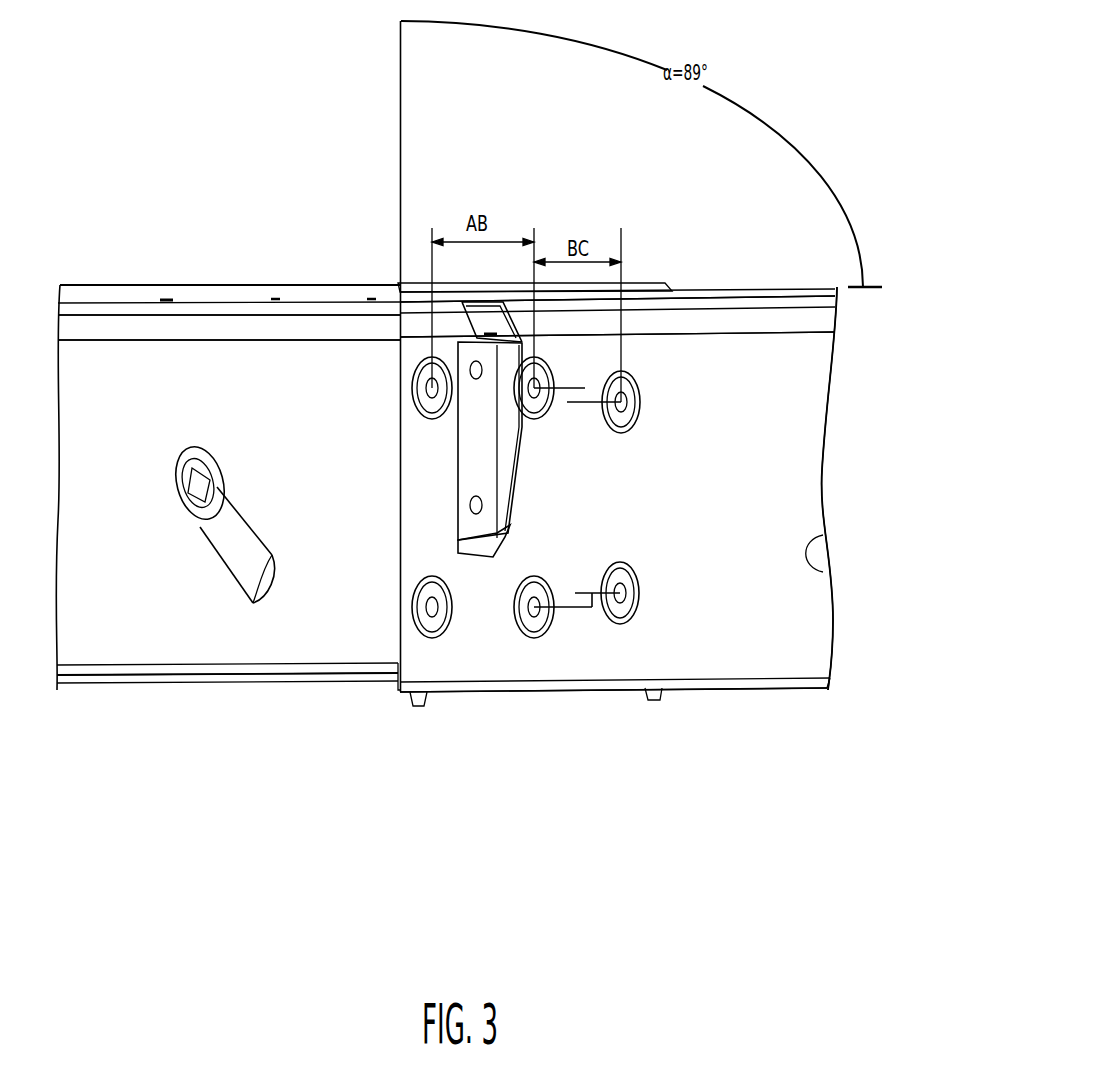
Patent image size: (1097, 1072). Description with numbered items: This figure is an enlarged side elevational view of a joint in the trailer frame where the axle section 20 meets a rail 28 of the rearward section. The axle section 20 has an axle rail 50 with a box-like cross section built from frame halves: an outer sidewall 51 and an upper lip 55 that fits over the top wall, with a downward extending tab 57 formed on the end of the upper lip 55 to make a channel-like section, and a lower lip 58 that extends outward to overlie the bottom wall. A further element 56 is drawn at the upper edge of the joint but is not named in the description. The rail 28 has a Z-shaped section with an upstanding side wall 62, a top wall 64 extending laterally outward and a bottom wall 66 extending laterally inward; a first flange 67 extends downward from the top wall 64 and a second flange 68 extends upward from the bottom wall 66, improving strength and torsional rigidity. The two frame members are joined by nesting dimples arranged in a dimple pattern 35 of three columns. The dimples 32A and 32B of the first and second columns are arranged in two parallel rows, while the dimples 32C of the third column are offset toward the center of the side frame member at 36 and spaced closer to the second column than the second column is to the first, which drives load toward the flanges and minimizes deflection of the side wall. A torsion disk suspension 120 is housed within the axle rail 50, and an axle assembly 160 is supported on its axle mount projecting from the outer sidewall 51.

The axle section 20 is at (84, 200).
The rail of rearward section 28 is at (754, 357).
The dimples in first column 32A is at (432, 418).
The dimples in second column 32B is at (548, 405).
The dimples in third column 32C is at (641, 402).
The dimple pattern 35 is at (534, 660).
The center of side frame member 36 is at (584, 394).
The axle rail 50 is at (131, 578).
The outer sidewall 51 is at (230, 414).
The upper lip 55 is at (299, 313).
The upper flange 56 is at (647, 277).
The downward extending tab 57 is at (345, 326).
The lower lip 58 is at (162, 672).
The upstanding side wall 62 is at (770, 623).
The top wall 64 is at (720, 292).
The bottom wall 66 is at (393, 697).
The first flange 67 is at (697, 335).
The second flange 68 is at (384, 687).
The torsion disk suspension 120 is at (143, 415).
The axle assembly 160 is at (290, 590).